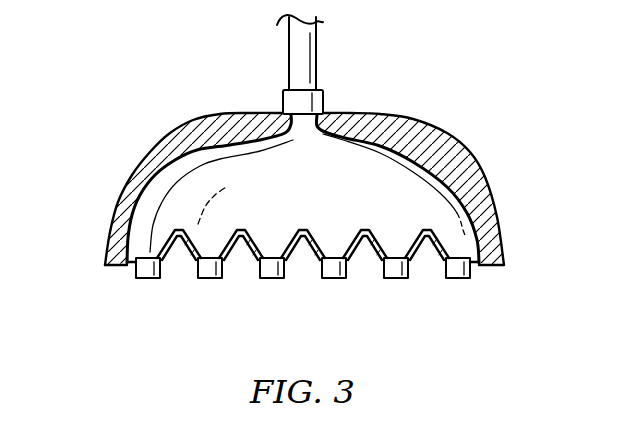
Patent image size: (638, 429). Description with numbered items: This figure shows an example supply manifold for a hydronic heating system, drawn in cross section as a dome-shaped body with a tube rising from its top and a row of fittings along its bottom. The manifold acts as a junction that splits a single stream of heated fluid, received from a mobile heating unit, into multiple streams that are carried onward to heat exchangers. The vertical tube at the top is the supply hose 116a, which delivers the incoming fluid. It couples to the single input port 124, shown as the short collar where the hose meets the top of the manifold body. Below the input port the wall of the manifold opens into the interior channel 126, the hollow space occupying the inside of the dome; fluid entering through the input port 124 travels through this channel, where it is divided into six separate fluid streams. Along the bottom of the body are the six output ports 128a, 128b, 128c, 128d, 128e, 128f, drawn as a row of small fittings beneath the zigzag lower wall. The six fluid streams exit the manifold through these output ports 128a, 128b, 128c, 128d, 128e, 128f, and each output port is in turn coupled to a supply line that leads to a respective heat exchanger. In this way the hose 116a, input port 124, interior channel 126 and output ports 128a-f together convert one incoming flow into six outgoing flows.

The supply hose 116a is at (289, 54).
The input port 124 is at (283, 102).
The interior channel 126 is at (324, 199).
The output port 128a is at (147, 278).
The output port 128b is at (210, 278).
The output port 128c is at (270, 278).
The output port 128d is at (333, 278).
The output port 128e is at (395, 278).
The output port 128f is at (457, 278).